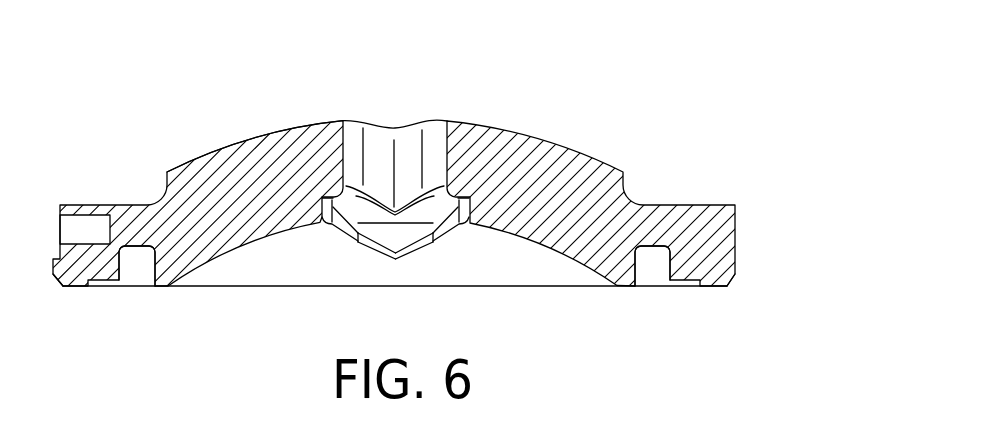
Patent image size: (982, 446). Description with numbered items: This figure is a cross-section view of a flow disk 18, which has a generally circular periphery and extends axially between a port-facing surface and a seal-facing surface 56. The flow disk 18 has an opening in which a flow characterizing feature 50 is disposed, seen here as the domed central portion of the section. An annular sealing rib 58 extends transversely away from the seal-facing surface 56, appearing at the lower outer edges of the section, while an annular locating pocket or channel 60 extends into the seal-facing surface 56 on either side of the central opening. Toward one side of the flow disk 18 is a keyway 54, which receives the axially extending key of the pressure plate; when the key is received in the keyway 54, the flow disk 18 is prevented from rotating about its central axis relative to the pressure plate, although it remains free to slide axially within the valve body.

The flow disk 18 is at (553, 82).
The flow characterizing feature 50 is at (285, 127).
The keyway 54 is at (82, 207).
The seal-facing surface 56 is at (693, 288).
The annular sealing rib 58 is at (73, 288).
The annular locating pocket or channel 60 is at (147, 305).